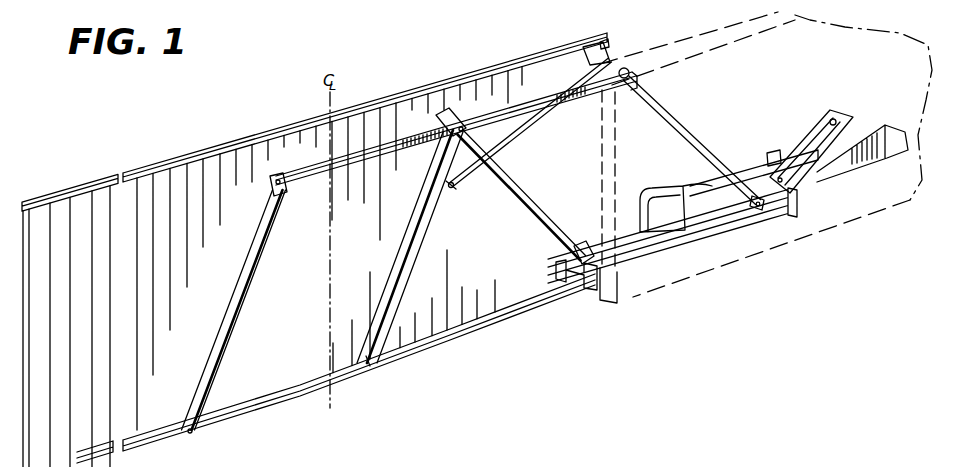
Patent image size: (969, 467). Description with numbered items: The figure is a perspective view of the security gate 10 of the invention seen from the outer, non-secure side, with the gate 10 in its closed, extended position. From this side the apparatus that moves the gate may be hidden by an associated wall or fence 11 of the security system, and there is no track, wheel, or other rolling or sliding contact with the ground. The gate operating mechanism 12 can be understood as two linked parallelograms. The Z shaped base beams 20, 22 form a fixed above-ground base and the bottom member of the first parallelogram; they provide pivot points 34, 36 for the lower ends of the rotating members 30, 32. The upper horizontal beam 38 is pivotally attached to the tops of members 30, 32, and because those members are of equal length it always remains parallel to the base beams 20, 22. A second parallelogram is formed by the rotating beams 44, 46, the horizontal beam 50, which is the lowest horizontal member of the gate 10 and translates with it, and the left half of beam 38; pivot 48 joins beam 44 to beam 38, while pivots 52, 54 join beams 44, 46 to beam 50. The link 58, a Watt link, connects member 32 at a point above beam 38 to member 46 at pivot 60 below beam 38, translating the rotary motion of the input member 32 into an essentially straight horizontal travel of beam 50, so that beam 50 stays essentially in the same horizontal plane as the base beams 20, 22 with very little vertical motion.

The security gate 10 is at (498, 63).
The wall or fence 11 is at (833, 53).
The gate operating mechanism 12 is at (681, 110).
The Z shaped beam 20 is at (557, 283).
The Z shaped beam 22 is at (556, 268).
The rotating member 30 is at (513, 182).
The rotating member 32 is at (705, 152).
The pivot point 34 is at (584, 250).
The pivot point 36 is at (752, 210).
The upper horizontal beam 38 is at (383, 160).
The rotating beam 44 is at (243, 300).
The rotating beam 46 is at (430, 222).
The pivot 48 is at (288, 200).
The horizontal beam 50 is at (277, 408).
The pivot 52 is at (192, 433).
The pivot 54 is at (375, 368).
The link 58 is at (530, 133).
The pivot 60 is at (452, 188).